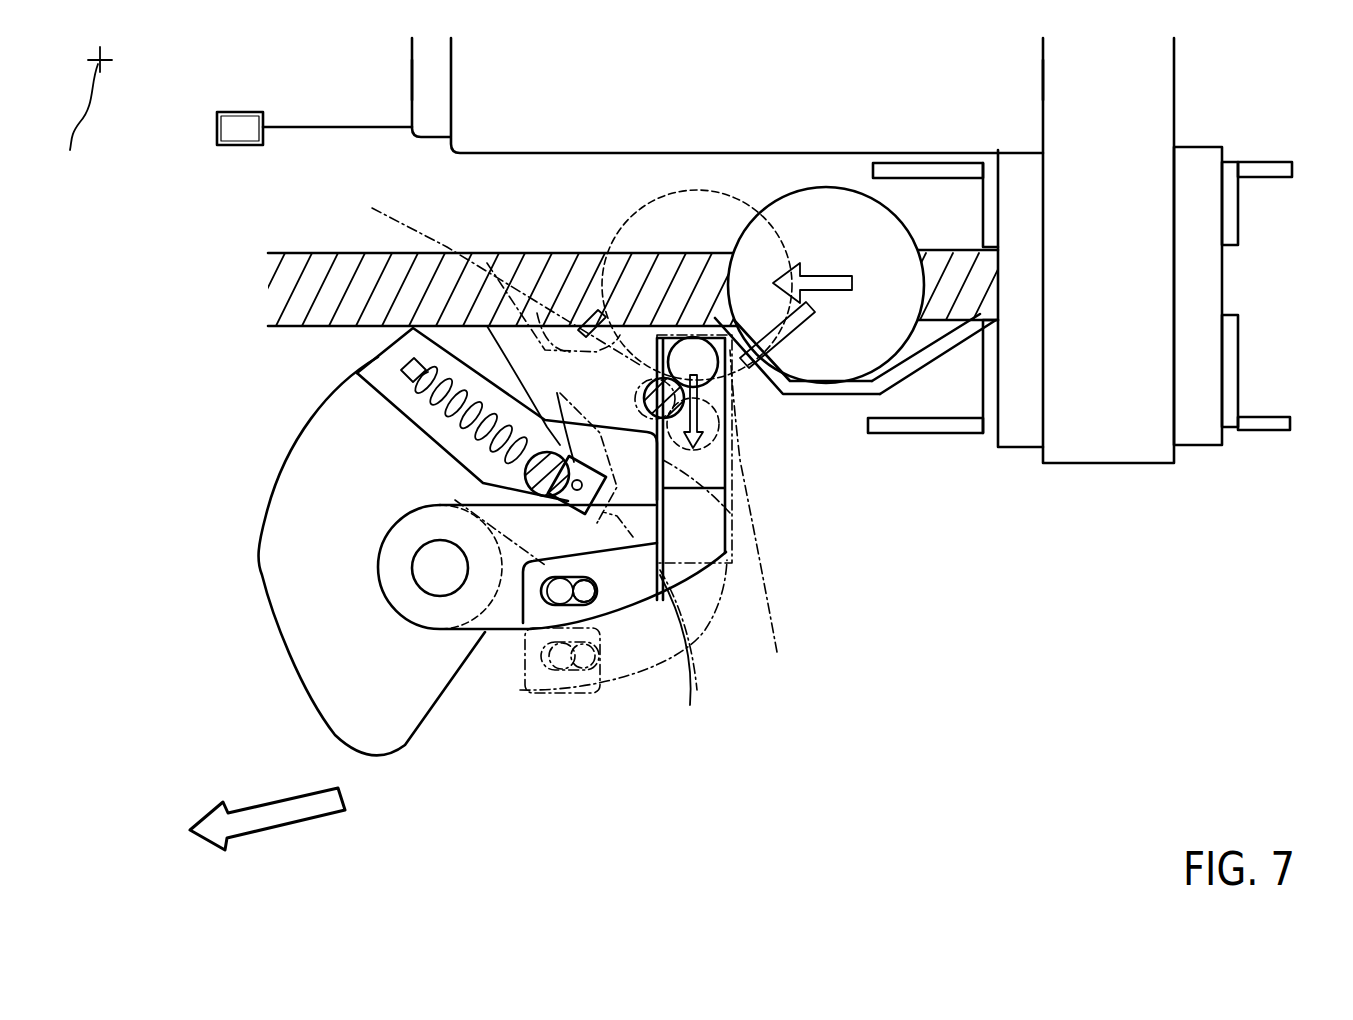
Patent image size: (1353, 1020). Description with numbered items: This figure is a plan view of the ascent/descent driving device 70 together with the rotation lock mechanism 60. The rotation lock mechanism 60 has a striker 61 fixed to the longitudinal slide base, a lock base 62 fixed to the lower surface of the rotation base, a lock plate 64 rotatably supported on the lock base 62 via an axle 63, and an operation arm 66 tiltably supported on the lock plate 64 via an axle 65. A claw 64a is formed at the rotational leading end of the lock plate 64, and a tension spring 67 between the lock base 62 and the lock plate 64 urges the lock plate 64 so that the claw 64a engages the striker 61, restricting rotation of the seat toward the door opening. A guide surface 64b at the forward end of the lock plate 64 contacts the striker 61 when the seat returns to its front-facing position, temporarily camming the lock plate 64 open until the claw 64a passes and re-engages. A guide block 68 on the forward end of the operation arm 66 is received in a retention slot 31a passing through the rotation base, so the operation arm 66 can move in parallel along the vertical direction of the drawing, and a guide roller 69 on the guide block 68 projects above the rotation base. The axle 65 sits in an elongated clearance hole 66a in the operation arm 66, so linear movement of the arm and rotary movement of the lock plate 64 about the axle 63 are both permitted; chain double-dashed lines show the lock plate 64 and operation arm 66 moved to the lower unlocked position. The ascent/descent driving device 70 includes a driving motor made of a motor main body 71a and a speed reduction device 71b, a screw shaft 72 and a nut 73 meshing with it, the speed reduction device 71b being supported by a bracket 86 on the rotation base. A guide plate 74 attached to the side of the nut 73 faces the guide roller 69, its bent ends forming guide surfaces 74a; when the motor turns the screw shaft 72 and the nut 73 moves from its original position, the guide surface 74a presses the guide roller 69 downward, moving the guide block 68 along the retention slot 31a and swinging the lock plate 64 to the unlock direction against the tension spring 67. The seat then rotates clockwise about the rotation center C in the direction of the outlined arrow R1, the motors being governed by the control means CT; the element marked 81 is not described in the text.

The retention slot 31a is at (767, 523).
The rotation lock mechanism 60 is at (610, 764).
The striker 61 is at (535, 498).
The lock base 62 is at (293, 602).
The axle 63 is at (440, 570).
The lock plate 64 is at (513, 595).
The claw 64a is at (491, 268).
The guide surface 64b is at (552, 410).
The axle 65 is at (560, 605).
The operation arm 66 is at (587, 604).
The clearance hole 66a is at (580, 670).
The tension spring 67 is at (455, 418).
The guide block 68 is at (677, 485).
The guide roller 69 is at (712, 362).
The ascent/descent driving device 70 is at (1086, 494).
The motor main body 71a is at (482, 73).
The speed reduction device 71b is at (1112, 90).
The screw shaft 72 is at (322, 316).
The nut 73 is at (808, 218).
The guide plate 74 is at (590, 370).
The guide surface 74a is at (742, 352).
The flange 81 is at (955, 425).
The bracket 86 is at (1267, 422).
The rotation center C is at (83, 119).
The control means CT is at (314, 129).
The arrow indicating rotation direction R1 is at (267, 823).